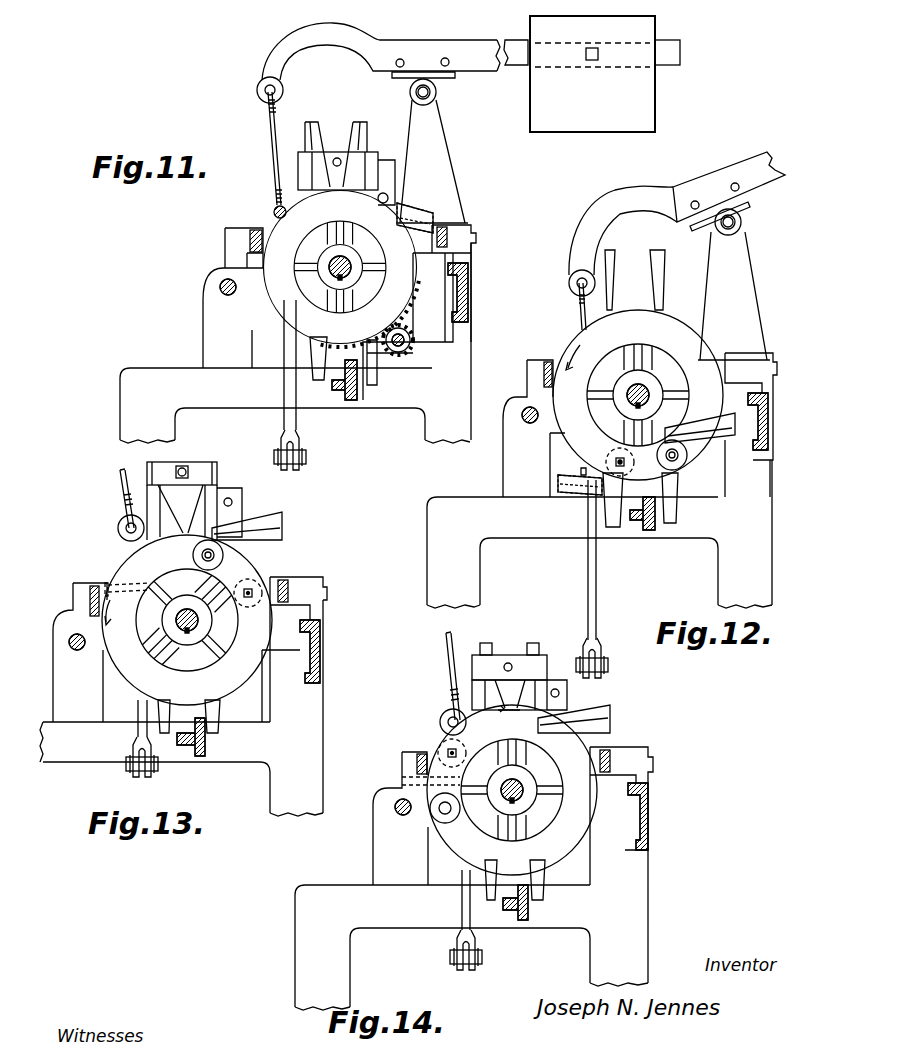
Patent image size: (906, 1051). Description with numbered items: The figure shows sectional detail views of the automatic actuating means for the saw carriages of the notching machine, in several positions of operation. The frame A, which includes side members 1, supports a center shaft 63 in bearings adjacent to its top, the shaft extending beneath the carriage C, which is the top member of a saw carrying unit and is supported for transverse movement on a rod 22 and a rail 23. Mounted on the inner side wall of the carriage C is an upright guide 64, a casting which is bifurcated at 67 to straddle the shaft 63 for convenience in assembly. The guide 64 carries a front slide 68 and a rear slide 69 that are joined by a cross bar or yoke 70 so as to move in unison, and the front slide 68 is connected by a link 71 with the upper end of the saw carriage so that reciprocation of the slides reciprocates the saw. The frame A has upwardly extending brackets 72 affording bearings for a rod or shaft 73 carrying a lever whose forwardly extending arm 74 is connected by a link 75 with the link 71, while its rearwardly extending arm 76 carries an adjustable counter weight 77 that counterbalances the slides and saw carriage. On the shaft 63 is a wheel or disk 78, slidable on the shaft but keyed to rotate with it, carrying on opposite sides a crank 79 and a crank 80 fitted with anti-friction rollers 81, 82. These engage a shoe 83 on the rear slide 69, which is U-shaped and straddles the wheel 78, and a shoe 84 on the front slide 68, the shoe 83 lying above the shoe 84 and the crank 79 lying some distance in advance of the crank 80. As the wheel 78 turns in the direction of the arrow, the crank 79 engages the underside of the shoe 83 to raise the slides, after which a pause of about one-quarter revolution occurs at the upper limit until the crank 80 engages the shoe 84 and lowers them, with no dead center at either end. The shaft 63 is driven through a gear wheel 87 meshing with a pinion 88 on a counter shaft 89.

In FIG. 11, the side members 1 is at (120, 420).
In FIG. 12, the side members 1 is at (599, 534).
In FIG. 13, the side members 1 is at (181, 708).
In FIG. 14, the side members 1 is at (636, 948).
In FIG. 11, the frame A is at (170, 368).
In FIG. 13, the frame A is at (312, 748).
In FIG. 14, the frame A is at (307, 911).
In FIG. 11, the carriage C is at (225, 240).
In FIG. 12, the carriage C is at (535, 362).
In FIG. 13, the carriage C is at (73, 590).
In FIG. 14, the carriage C is at (405, 755).
In FIG. 11, the rod 22 is at (220, 289).
In FIG. 12, the rod 22 is at (528, 425).
In FIG. 13, the rod 22 is at (75, 652).
In FIG. 14, the rod 22 is at (401, 817).
In FIG. 11, the rail 23 is at (470, 292).
In FIG. 12, the rail 23 is at (760, 455).
In FIG. 13, the rail 23 is at (320, 650).
In FIG. 14, the rail 23 is at (650, 835).
In FIG. 11, the shaft 63 is at (350, 268).
In FIG. 12, the shaft 63 is at (650, 393).
In FIG. 13, the shaft 63 is at (192, 650).
In FIG. 14, the shaft 63 is at (525, 790).
In FIG. 11, the upright guides 64 is at (365, 140).
In FIG. 13, the upright guides 64 is at (205, 495).
In FIG. 14, the upright guides 64 is at (492, 645).
In FIG. 11, the bifurcation 67 is at (360, 380).
In FIG. 12, the bifurcation 67 is at (690, 510).
In FIG. 13, the bifurcation 67 is at (205, 735).
In FIG. 14, the bifurcation 67 is at (553, 914).
In FIG. 11, the front slide 68 is at (298, 180).
In FIG. 13, the front slide 68 is at (150, 505).
In FIG. 14, the front slide 68 is at (472, 697).
In FIG. 11, the rear slide 69 is at (370, 172).
In FIG. 13, the rear slide 69 is at (240, 500).
In FIG. 14, the rear slide 69 is at (560, 693).
In FIG. 11, the cross bar or yoke 70 is at (335, 150).
In FIG. 12, the cross bar or yoke 70 is at (640, 388).
In FIG. 13, the cross bar or yoke 70 is at (205, 468).
In FIG. 14, the cross bar or yoke 70 is at (527, 662).
In FIG. 11, the link 71 is at (284, 350).
In FIG. 12, the link 71 is at (597, 578).
In FIG. 13, the link 71 is at (137, 740).
In FIG. 14, the link 71 is at (462, 912).
In FIG. 11, the brackets 72 is at (455, 210).
In FIG. 12, the brackets 72 is at (738, 282).
In FIG. 11, the rod or shaft 73 is at (435, 92).
In FIG. 12, the rod or shaft 73 is at (742, 222).
In FIG. 11, the forwardly extending arm 74 is at (268, 50).
In FIG. 12, the forwardly extending arm 74 is at (570, 240).
In FIG. 11, the link 75 is at (276, 150).
In FIG. 12, the link 75 is at (580, 322).
In FIG. 13, the link 75 is at (122, 486).
In FIG. 14, the link 75 is at (448, 670).
In FIG. 11, the rearwardly extending arm 76 is at (488, 40).
In FIG. 12, the rearwardly extending arm 76 is at (725, 170).
In FIG. 11, the counter weight 77 is at (656, 120).
In FIG. 12, the wheel or disk 78 is at (700, 355).
In FIG. 14, the wheel or disk 78 is at (570, 758).
In FIG. 12, the wrist pin or crank 79 is at (685, 460).
In FIG. 13, the wrist pin or crank 79 is at (193, 555).
In FIG. 14, the wrist pin or crank 79 is at (447, 823).
In FIG. 12, the wrist pin or crank 80 is at (640, 470).
In FIG. 12, the anti-friction roller 81 is at (688, 453).
In FIG. 13, the anti-friction roller 81 is at (224, 555).
In FIG. 12, the anti-friction roller 82 is at (608, 460).
In FIG. 13, the anti-friction roller 82 is at (248, 593).
In FIG. 14, the anti-friction roller 82 is at (452, 753).
In FIG. 11, the shoe 83 is at (420, 210).
In FIG. 12, the shoe 83 is at (682, 430).
In FIG. 13, the shoe 83 is at (272, 525).
In FIG. 14, the shoe 83 is at (598, 720).
In FIG. 12, the shoe 84 is at (580, 496).
In FIG. 13, the shoe 84 is at (103, 583).
In FIG. 14, the shoe 84 is at (400, 781).
In FIG. 11, the gear wheel 87 is at (288, 292).
In FIG. 11, the pinion 88 is at (402, 346).
In FIG. 11, the counter shaft 89 is at (404, 343).